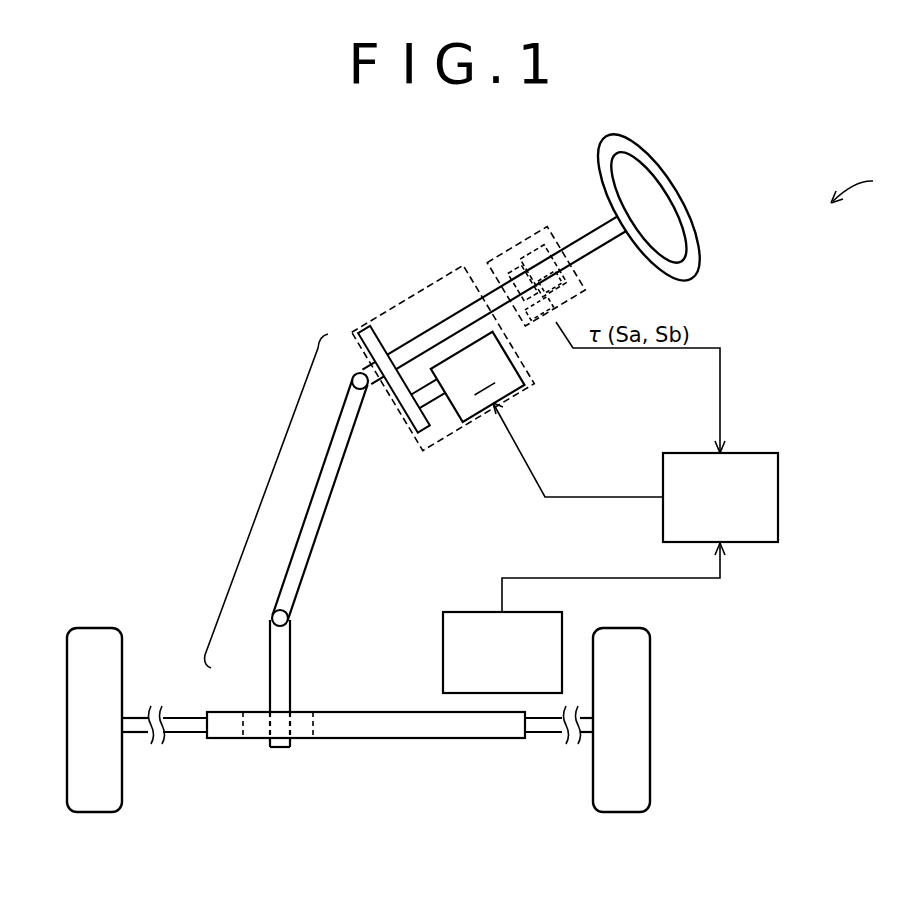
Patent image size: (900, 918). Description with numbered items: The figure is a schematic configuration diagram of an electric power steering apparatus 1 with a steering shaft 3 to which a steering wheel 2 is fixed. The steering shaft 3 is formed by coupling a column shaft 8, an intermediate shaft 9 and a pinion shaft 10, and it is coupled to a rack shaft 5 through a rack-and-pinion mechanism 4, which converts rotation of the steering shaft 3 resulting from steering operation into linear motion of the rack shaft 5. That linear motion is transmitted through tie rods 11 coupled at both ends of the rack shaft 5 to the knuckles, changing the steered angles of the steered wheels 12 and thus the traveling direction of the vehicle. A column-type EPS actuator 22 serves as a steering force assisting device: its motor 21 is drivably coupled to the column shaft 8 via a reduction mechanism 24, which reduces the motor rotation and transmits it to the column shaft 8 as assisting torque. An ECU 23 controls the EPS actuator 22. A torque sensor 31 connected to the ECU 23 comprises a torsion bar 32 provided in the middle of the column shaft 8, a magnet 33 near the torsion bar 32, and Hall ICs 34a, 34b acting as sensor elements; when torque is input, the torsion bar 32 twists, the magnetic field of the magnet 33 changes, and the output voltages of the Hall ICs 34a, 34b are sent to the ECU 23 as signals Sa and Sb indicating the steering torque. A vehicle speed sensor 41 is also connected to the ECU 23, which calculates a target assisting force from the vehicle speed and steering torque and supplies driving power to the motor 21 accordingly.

The electric power steering apparatus 1 is at (872, 192).
The steering wheel 2 is at (693, 238).
The steering shaft 3 is at (266, 501).
The rack-and-pinion mechanism 4 is at (300, 739).
The rack shaft 5 is at (362, 712).
The column shaft 8 is at (367, 366).
The intermediate shaft 9 is at (318, 481).
The pinion shaft 10 is at (270, 657).
The tie rods 11 is at (182, 733).
The steered wheels 12 is at (122, 659).
The motor 21 is at (547, 414).
The EPS actuator 22 is at (418, 291).
The ECU 23 is at (778, 498).
The reduction mechanism 24 is at (398, 397).
The torque sensor 31 is at (573, 274).
The torsion bar 32 is at (522, 267).
The magnet 33 is at (528, 263).
The Hall IC 34a is at (547, 328).
The Hall IC 34b is at (571, 307).
The vehicle speed sensor 41 is at (468, 611).